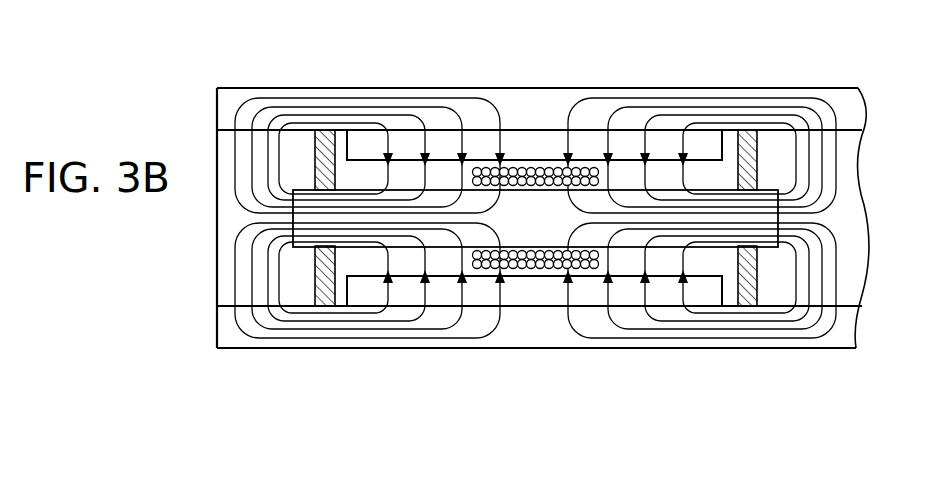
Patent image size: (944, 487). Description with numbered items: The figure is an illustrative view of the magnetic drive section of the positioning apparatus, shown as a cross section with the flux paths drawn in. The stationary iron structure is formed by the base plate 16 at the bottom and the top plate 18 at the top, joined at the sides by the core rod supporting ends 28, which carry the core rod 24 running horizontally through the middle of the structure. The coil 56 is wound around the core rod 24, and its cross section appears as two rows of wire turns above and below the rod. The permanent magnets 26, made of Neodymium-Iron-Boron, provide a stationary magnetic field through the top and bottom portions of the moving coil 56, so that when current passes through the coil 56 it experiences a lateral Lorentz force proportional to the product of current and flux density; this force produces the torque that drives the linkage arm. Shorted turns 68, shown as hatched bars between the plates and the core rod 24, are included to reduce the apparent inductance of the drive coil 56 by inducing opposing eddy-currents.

The base plate 16 is at (525, 334).
The top plate 18 is at (528, 112).
The core rod 24 is at (518, 208).
The permanent magnets 26 is at (555, 133).
The core rod supporting ends 28 is at (232, 217).
The coil 56 is at (546, 285).
The shorted turns 68 is at (313, 292).